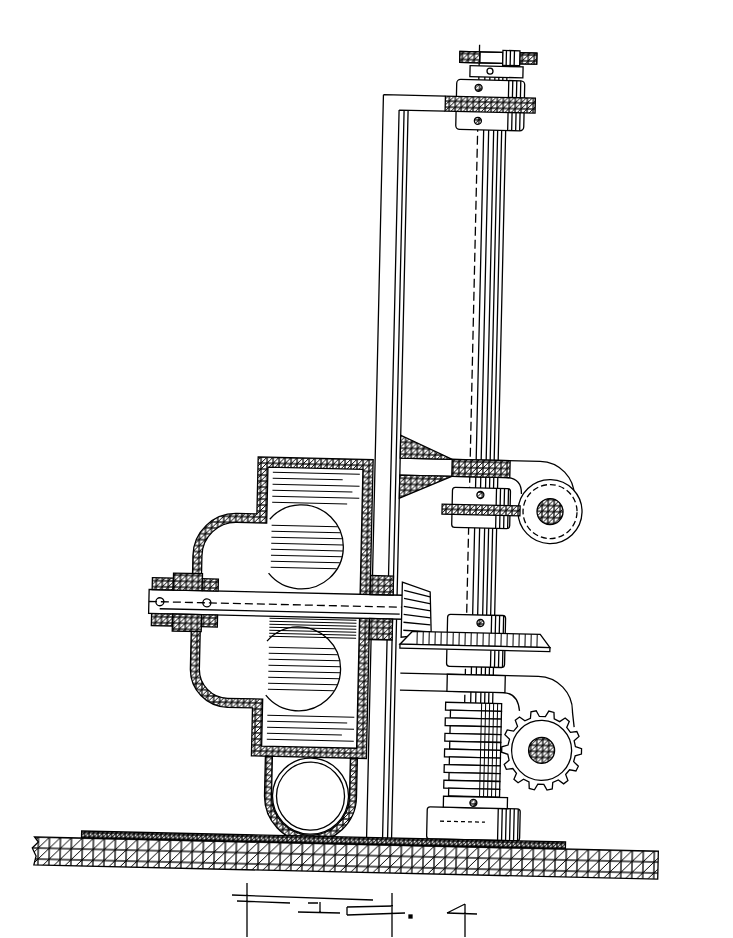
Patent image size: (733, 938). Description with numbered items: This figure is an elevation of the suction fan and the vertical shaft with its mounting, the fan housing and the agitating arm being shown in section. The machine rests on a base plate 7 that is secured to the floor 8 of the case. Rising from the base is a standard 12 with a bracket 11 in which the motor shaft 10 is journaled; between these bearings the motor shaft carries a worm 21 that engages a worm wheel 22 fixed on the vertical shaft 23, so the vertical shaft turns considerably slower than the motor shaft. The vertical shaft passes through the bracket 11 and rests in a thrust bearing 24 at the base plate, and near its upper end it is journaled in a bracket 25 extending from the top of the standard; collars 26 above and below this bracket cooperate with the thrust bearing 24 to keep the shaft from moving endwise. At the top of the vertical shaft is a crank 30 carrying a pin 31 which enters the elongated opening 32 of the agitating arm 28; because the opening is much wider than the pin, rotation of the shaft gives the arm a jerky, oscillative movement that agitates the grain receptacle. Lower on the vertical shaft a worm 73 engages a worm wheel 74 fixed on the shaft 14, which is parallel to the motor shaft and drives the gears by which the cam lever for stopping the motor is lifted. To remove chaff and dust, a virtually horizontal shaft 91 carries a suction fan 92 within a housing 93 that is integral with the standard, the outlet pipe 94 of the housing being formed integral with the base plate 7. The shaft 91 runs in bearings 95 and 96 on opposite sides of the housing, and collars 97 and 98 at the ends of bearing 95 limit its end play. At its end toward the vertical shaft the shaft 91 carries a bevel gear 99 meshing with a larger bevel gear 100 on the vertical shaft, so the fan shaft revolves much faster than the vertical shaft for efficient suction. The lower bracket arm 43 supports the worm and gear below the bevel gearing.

The base plate 7 is at (180, 840).
The floor 8 is at (72, 847).
The motor shaft 10 is at (561, 516).
The bracket 11 is at (532, 465).
The standard 12 is at (395, 274).
The shaft 14 is at (558, 749).
The worm 21 is at (564, 535).
The worm wheel 22 is at (443, 510).
The vertical shaft 23 is at (473, 367).
The thrust bearing 24 is at (525, 827).
The bracket 25 is at (429, 112).
The collars 26 is at (513, 118).
The arm 28 is at (447, 56).
The crank 30 is at (511, 71).
The pin 31 is at (503, 50).
The elongated opening 32 is at (474, 52).
The lower bracket arm 43 is at (447, 686).
The worm 73 is at (449, 766).
The worm wheel 74 is at (585, 758).
The horizontal shaft 91 is at (238, 606).
The suction fan 92 is at (272, 503).
The housing 93 is at (295, 462).
The outlet pipe 94 is at (318, 822).
The bearing 95 is at (185, 580).
The bearing 96 is at (393, 580).
The collar 97 is at (161, 634).
The collar 98 is at (208, 634).
The bevel gear 99 is at (420, 596).
The bevel gear 100 is at (521, 646).